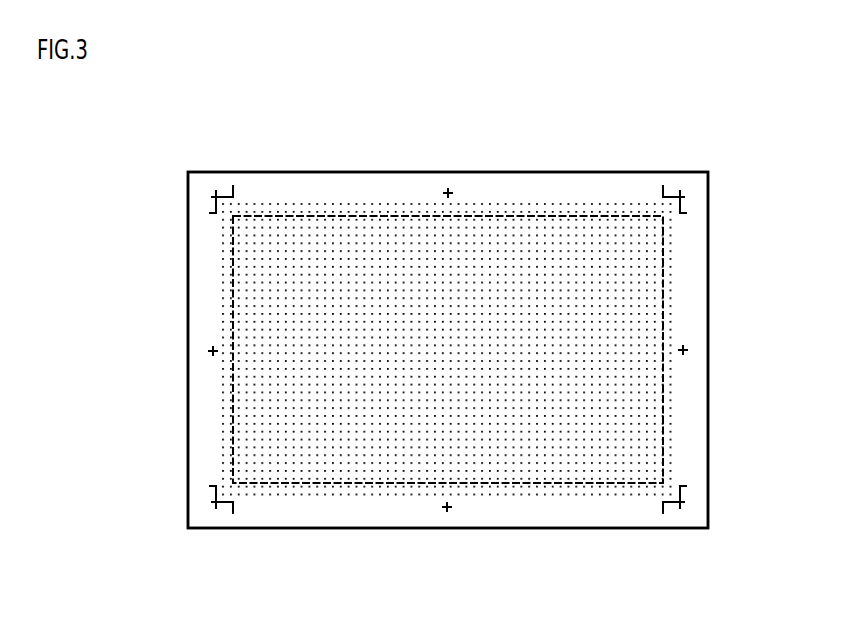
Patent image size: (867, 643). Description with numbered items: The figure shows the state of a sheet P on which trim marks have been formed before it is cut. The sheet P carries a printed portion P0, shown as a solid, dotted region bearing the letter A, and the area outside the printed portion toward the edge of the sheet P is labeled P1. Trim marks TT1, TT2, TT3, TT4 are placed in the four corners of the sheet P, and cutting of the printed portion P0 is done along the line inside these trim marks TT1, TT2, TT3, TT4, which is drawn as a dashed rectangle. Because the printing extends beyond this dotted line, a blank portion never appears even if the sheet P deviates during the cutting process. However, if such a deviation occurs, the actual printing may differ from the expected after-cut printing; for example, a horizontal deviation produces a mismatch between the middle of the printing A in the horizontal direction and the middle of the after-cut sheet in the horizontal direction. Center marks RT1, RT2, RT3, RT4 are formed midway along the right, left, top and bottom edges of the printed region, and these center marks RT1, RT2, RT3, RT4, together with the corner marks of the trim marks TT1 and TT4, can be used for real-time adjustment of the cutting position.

The sheet P is at (488, 528).
The printed portion P0 is at (287, 498).
The non-image margin region P1 is at (618, 515).
The trim mark TT1 is at (691, 198).
The trim mark TT2 is at (692, 495).
The trim mark TT3 is at (206, 190).
The trim mark TT4 is at (213, 508).
The center mark RT1 is at (692, 352).
The center mark RT2 is at (204, 352).
The center mark RT3 is at (456, 187).
The center mark RT4 is at (444, 517).